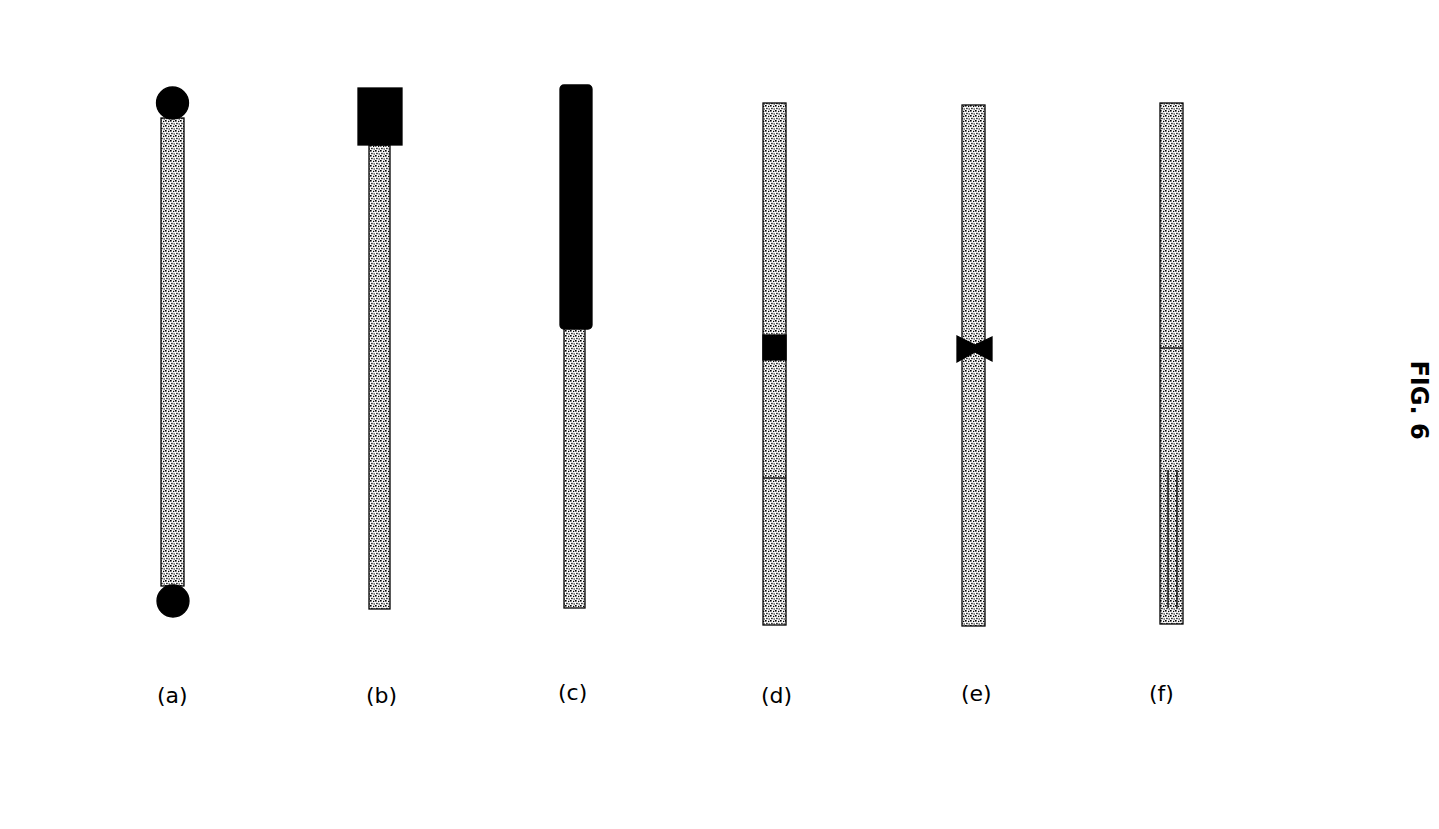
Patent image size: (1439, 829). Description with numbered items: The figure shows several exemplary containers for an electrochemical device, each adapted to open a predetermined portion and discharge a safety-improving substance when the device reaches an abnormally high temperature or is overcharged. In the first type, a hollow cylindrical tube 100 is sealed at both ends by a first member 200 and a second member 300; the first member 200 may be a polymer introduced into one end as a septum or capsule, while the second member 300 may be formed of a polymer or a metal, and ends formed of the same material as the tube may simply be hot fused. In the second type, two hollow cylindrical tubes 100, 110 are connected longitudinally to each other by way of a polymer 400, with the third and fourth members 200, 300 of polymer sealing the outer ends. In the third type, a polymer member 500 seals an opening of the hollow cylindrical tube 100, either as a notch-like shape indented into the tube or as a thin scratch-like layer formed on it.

The hollow cylindrical tube 100 is at (184, 293).
The hollow cylindrical tube 110 is at (786, 478).
The first member 200 is at (189, 102).
The second member 300 is at (189, 600).
The polymer 400 is at (786, 348).
The polymer member 500 is at (992, 348).